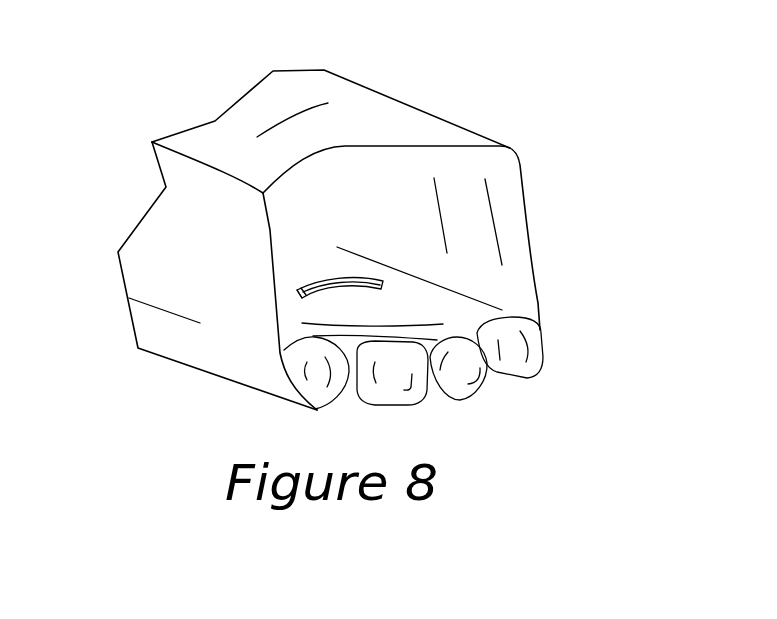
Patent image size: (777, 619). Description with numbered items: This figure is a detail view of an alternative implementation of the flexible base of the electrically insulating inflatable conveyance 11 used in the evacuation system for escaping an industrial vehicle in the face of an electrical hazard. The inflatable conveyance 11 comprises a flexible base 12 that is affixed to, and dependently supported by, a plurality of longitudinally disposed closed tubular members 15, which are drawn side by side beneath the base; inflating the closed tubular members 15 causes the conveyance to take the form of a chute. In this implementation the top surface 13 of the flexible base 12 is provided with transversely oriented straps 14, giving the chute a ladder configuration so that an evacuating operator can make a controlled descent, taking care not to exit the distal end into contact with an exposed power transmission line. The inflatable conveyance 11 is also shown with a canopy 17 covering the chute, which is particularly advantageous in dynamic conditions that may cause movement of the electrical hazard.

The electrically insulating inflatable conveyance 11 is at (71, 164).
The flexible base 12 is at (310, 316).
The top surface 13 is at (425, 305).
The transversely oriented straps 14 is at (327, 275).
The longitudinally disposed closed tubular members 15 is at (387, 393).
The canopy 17 is at (368, 107).